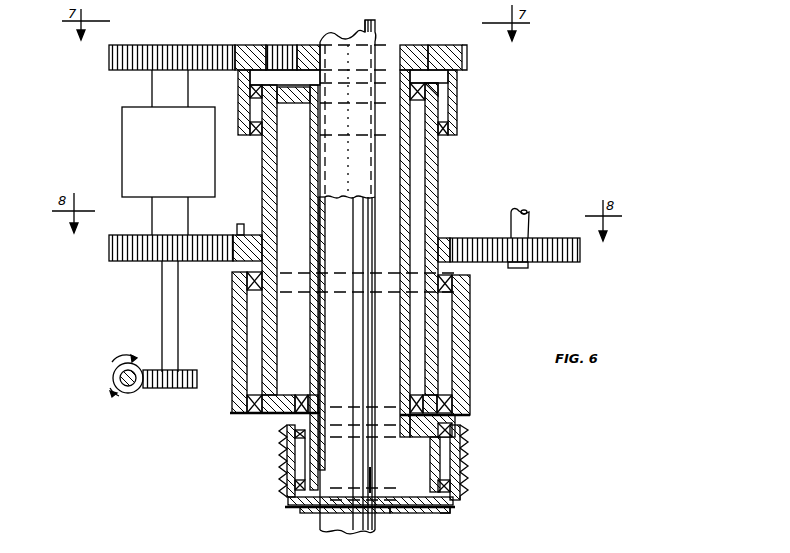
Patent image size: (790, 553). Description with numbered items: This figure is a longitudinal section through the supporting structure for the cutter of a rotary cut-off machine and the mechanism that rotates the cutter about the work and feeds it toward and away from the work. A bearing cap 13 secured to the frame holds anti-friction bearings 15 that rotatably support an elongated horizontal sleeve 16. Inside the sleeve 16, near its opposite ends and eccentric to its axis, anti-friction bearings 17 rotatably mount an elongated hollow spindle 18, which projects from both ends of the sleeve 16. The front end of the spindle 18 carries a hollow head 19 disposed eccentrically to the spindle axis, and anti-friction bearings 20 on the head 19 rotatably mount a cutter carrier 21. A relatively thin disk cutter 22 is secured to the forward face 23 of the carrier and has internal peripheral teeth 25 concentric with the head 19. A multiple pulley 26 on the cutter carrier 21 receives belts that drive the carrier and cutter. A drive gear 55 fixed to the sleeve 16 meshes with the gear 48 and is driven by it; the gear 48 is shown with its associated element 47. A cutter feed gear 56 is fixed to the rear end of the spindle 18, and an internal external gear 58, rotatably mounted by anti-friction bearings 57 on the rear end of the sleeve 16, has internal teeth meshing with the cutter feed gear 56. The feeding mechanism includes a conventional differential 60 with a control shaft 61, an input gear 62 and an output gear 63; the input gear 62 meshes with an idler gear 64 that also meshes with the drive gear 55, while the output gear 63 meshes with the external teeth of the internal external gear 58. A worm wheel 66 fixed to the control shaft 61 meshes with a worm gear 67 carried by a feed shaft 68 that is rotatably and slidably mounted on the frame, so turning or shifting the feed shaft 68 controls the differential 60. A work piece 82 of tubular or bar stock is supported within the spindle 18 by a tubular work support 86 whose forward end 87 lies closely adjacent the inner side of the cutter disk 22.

The bearing cap 13 is at (232, 347).
The anti-friction bearings 15 is at (247, 303).
The sleeve 16 is at (276, 414).
The anti-friction bearings 17 is at (300, 104).
The spindle 18 is at (312, 247).
The head 19 is at (430, 450).
The anti-friction bearings 20 is at (447, 430).
The cutter carrier 21 is at (458, 499).
The disk cutter 22 is at (422, 514).
The forward face 23 is at (447, 508).
The internal peripheral teeth 25 is at (392, 514).
The multiple pulley 26 is at (468, 468).
The pin 47 is at (528, 218).
The gear 48 is at (546, 262).
The drive gear 55 is at (442, 240).
The cutter feed gear 56 is at (310, 45).
The anti-friction bearings 57 is at (254, 90).
The internal external gear 58 is at (248, 44).
The differential 60 is at (121, 157).
The control shaft 61 is at (165, 301).
The input gear 62 is at (132, 235).
The output gear 63 is at (148, 45).
The idler gear 64 is at (240, 226).
The worm wheel 66 is at (185, 389).
The worm gear 67 is at (136, 388).
The feed shaft 68 is at (123, 385).
The work piece 82 is at (372, 18).
The tubular work support 86 is at (372, 42).
The forward end 87 is at (370, 490).